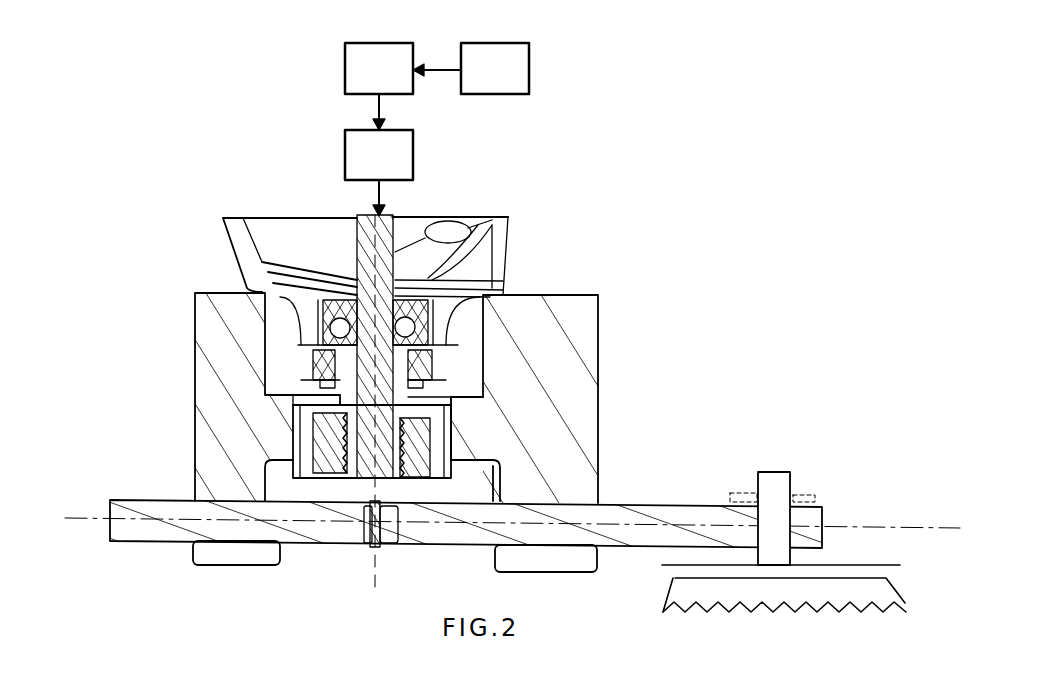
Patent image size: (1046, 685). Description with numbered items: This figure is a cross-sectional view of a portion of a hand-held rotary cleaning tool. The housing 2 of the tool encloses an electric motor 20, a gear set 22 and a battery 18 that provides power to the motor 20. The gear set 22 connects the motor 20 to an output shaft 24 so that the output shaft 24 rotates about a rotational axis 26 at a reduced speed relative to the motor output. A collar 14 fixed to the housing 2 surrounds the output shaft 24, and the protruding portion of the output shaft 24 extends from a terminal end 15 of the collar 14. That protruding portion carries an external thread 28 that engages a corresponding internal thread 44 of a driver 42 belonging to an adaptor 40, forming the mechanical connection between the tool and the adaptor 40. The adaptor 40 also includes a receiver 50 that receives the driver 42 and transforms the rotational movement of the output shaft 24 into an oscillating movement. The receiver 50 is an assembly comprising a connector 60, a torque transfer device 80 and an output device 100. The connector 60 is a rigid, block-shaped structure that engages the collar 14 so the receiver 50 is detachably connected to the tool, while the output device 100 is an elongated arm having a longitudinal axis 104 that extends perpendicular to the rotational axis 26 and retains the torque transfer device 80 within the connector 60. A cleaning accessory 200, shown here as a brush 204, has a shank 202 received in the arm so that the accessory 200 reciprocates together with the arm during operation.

The housing 2 is at (505, 245).
The collar 14 is at (472, 353).
The terminal end 15 is at (458, 405).
The battery 18 is at (510, 43).
The electric motor 20 is at (378, 43).
The gear set 22 is at (413, 150).
The output shaft 24 is at (395, 248).
The rotational axis 26 is at (358, 275).
The external thread 28 is at (410, 420).
The adaptor 40 is at (644, 276).
The driver 42 is at (322, 462).
The internal thread 44 is at (404, 420).
The receiver 50 is at (197, 343).
The connector 60 is at (479, 330).
The torque transfer device 80 is at (343, 493).
The output device 100 is at (636, 515).
The longitudinal axis 104 is at (148, 505).
The cleaning accessory 200 is at (835, 565).
The shank 202 is at (782, 472).
The brush 204 is at (726, 605).